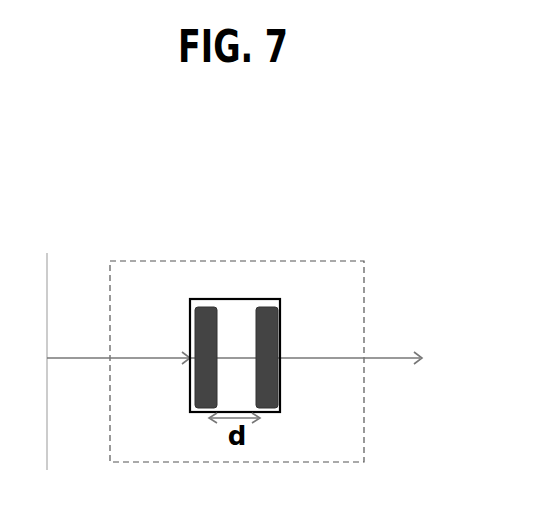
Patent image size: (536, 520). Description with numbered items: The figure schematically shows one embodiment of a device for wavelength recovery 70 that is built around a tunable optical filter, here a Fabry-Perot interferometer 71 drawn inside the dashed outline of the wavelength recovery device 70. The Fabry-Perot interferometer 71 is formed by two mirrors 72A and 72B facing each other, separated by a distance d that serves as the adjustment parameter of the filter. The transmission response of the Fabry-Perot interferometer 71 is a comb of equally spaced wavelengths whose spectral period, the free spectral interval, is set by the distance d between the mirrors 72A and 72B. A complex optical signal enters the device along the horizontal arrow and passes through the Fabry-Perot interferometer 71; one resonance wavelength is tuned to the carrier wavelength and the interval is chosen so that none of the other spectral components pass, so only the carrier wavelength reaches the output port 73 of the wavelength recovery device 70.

The wavelength recovery device 70 is at (361, 451).
The Fabry-Perot interferometer 71 is at (281, 339).
The first mirror 72A is at (207, 310).
The second mirror 72B is at (263, 312).
The output port 73 is at (403, 350).